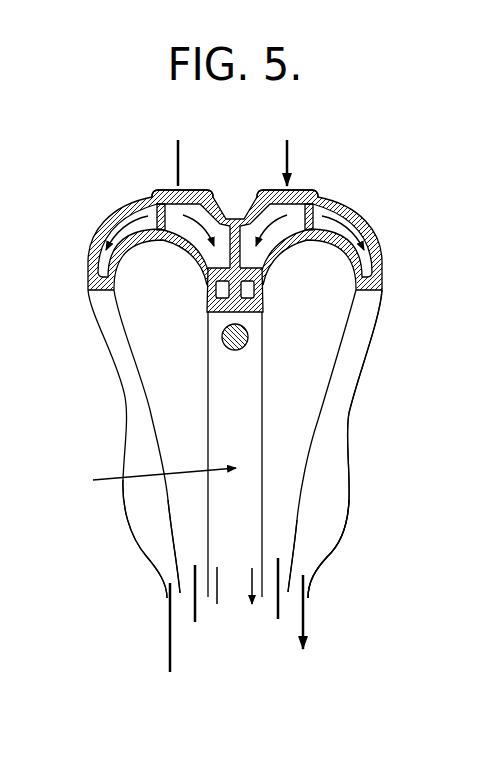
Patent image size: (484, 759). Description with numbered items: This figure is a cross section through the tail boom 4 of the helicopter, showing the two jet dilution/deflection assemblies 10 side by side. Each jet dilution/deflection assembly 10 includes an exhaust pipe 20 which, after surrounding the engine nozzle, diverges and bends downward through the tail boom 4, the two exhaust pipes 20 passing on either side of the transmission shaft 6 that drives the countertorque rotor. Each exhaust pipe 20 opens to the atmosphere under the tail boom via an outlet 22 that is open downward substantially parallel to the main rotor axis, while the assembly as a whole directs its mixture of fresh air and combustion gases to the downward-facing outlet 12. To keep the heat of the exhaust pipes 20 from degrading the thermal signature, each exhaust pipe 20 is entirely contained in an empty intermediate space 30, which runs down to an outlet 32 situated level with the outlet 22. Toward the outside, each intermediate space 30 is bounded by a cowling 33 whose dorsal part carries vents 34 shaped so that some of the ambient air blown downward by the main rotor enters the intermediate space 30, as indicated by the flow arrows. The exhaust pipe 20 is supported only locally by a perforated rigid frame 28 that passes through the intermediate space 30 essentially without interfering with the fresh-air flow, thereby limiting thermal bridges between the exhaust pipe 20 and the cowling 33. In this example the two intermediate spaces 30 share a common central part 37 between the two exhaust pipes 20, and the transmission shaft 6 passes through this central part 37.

The tail boom 4 is at (354, 455).
The transmission shaft 6 is at (247, 340).
The jet dilution/deflection assembly 10 is at (100, 196).
The outlet 12 is at (162, 608).
The exhaust pipe 20 is at (168, 280).
The outlet 22 is at (198, 590).
The perforated rigid frame 28 is at (310, 227).
The intermediate space 30 is at (235, 418).
The outlet 32 is at (165, 597).
The cowling 33 is at (128, 528).
The vents 34 is at (273, 193).
The common central part 37 is at (150, 481).